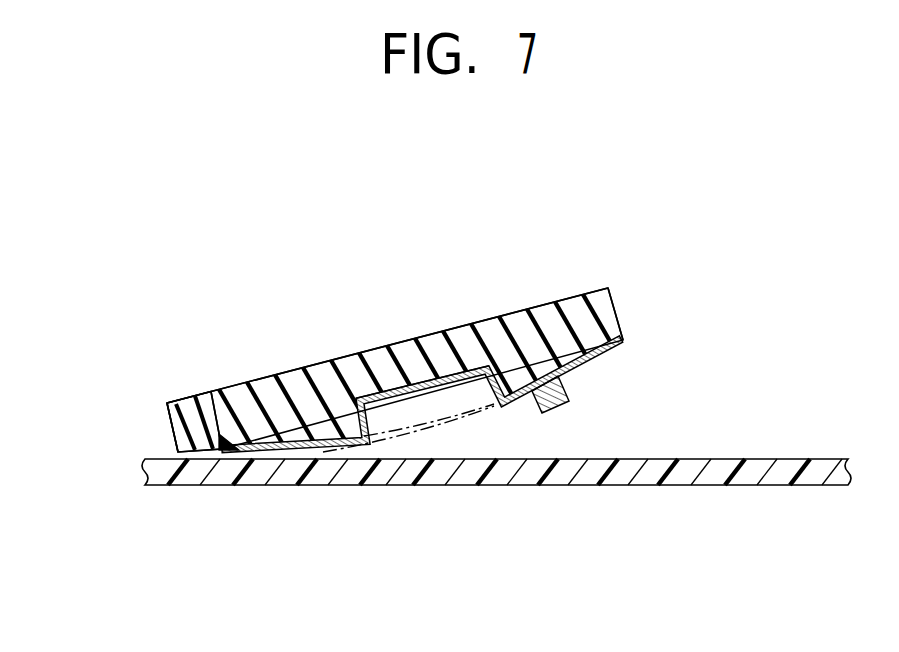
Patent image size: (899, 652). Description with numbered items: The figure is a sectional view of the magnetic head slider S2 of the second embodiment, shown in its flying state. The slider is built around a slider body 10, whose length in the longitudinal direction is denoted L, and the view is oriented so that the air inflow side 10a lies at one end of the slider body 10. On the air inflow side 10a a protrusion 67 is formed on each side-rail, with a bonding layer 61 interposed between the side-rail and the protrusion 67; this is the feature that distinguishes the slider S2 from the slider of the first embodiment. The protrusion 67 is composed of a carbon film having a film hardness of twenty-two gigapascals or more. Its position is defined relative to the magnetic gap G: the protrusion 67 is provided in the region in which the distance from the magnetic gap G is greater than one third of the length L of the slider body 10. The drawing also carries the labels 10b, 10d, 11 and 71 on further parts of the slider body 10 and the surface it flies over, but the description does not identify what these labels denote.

The slider body 10 is at (232, 366).
The air inflow side 10a is at (630, 300).
The other end of member 10 10b is at (142, 408).
The bottom surface of member 10 10d is at (432, 375).
The end portion 11 is at (184, 440).
The bonding layer 61 is at (623, 340).
The protrusion 67 is at (560, 388).
The base plate 71 is at (809, 473).
The magnetic gap G is at (213, 418).
The magnetic head slider S2 is at (331, 327).